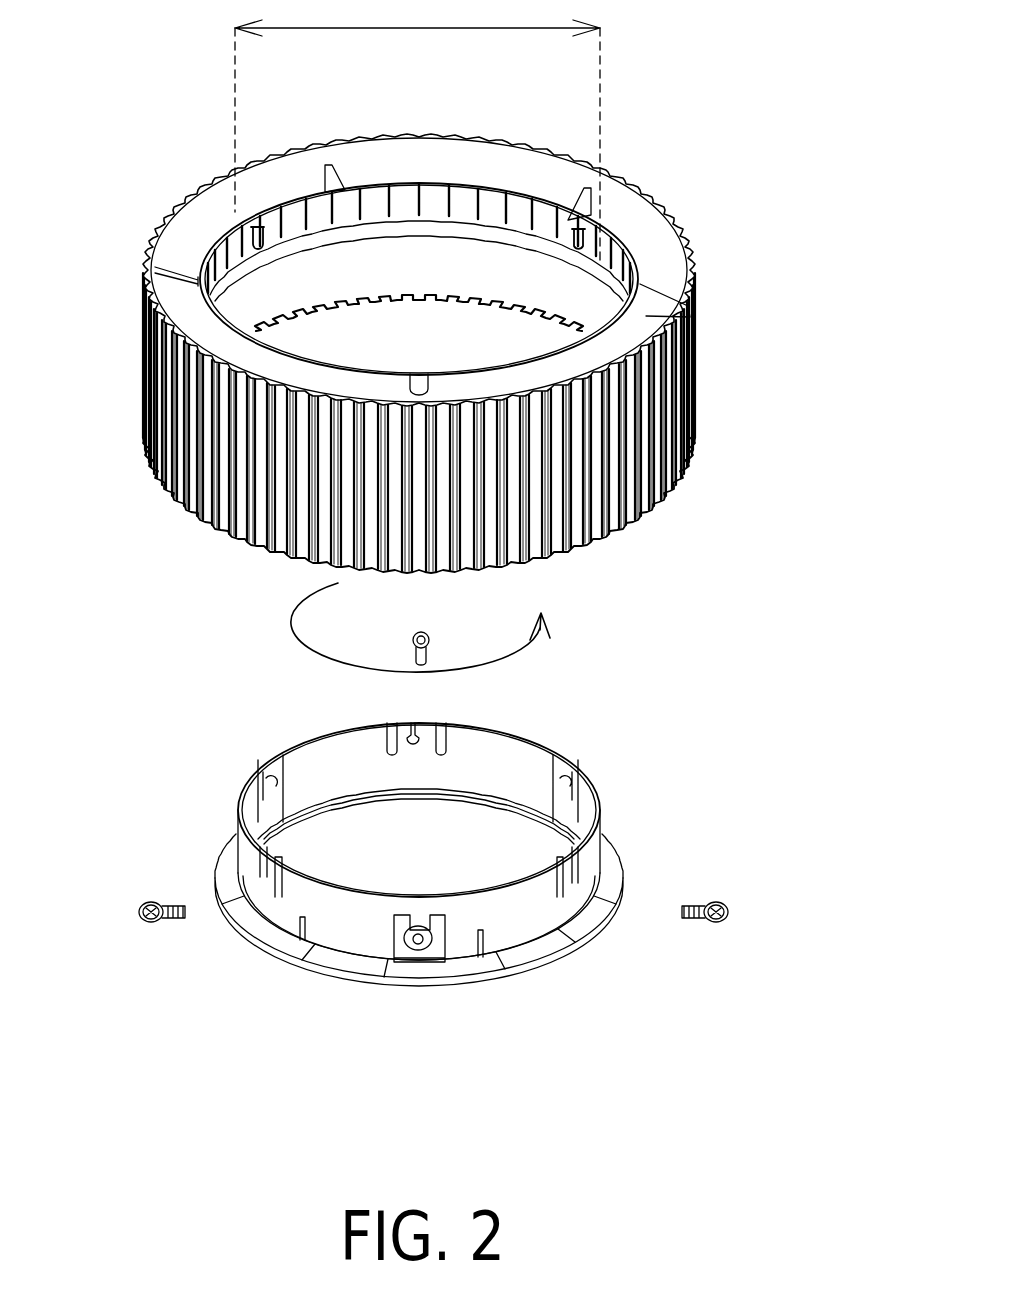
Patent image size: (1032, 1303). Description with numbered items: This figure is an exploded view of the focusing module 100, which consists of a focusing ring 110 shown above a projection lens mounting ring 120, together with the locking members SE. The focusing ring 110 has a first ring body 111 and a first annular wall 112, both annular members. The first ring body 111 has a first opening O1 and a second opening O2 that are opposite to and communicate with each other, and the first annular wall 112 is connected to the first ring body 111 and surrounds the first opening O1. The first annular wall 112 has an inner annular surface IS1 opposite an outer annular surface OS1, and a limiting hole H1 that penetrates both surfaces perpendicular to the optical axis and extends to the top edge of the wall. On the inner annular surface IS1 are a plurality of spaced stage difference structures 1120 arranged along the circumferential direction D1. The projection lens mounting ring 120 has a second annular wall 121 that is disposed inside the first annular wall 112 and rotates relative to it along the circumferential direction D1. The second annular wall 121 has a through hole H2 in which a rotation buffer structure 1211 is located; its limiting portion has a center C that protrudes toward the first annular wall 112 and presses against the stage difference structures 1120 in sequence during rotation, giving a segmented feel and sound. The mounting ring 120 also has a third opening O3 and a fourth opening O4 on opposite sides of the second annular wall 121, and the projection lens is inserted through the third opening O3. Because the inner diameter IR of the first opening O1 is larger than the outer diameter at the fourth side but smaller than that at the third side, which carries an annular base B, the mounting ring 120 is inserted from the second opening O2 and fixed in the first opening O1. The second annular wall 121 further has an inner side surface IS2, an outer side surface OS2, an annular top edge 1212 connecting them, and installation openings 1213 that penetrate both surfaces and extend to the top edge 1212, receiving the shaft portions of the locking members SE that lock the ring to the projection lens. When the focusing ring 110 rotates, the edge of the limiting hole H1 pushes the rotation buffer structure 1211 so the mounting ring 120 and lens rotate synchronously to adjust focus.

The filter assembly 100 is at (473, 572).
The focusing ring 110 is at (473, 320).
The first ring body 111 is at (698, 300).
The first annular wall 112 is at (499, 231).
The stage difference structures 1120 is at (378, 200).
The projection lens mounting ring 120 is at (469, 874).
The second annular wall 121 is at (421, 874).
The rotation buffer structure 1211 is at (420, 916).
The annular top edge 1212 is at (598, 780).
The installation openings 1213 is at (452, 738).
The inner diameter IR is at (417, 134).
The first opening O1 is at (440, 188).
The second opening O2 is at (318, 313).
The third opening O3 is at (243, 838).
The fourth opening O4 is at (296, 740).
The inner annular surface IS1 is at (312, 225).
The inner side surface IS2 is at (322, 760).
The outer annular surface OS1 is at (298, 364).
The outer side surface OS2 is at (337, 933).
The limiting hole H1 is at (419, 373).
The through hole H2 is at (392, 938).
The center C is at (419, 946).
The annular base B is at (615, 926).
The circumferential direction D1 is at (540, 640).
The locking member SE is at (730, 912).